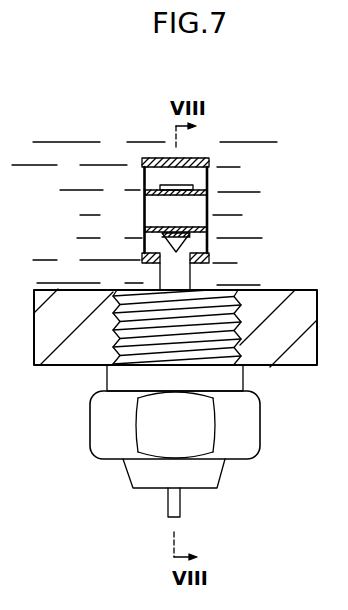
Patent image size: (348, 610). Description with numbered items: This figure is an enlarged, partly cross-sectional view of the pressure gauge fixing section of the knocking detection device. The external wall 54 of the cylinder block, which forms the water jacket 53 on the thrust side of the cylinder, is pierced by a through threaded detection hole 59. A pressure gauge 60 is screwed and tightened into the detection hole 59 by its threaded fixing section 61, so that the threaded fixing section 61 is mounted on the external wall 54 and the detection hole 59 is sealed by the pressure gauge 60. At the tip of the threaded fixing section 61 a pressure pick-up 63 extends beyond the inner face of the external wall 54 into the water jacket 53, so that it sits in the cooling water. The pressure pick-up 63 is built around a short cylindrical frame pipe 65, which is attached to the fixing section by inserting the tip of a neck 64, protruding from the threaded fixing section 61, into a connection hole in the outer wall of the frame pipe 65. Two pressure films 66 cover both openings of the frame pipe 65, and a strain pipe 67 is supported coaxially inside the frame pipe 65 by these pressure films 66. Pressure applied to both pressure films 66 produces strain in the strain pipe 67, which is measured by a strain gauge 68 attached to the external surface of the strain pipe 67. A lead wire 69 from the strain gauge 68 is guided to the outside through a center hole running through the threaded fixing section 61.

The water jacket 53 is at (110, 217).
The external wall 54 is at (48, 365).
The detection hole 59 is at (112, 333).
The pressure gauge 60 is at (209, 435).
The threaded fixing section 61 is at (247, 420).
The pressure pick-up 63 is at (206, 158).
The neck 64 is at (200, 275).
The frame pipe 65 is at (165, 185).
The pressure films 66 is at (143, 175).
The strain pipe 67 is at (208, 183).
The strain gauge 68 is at (167, 158).
The lead wire 69 is at (208, 240).